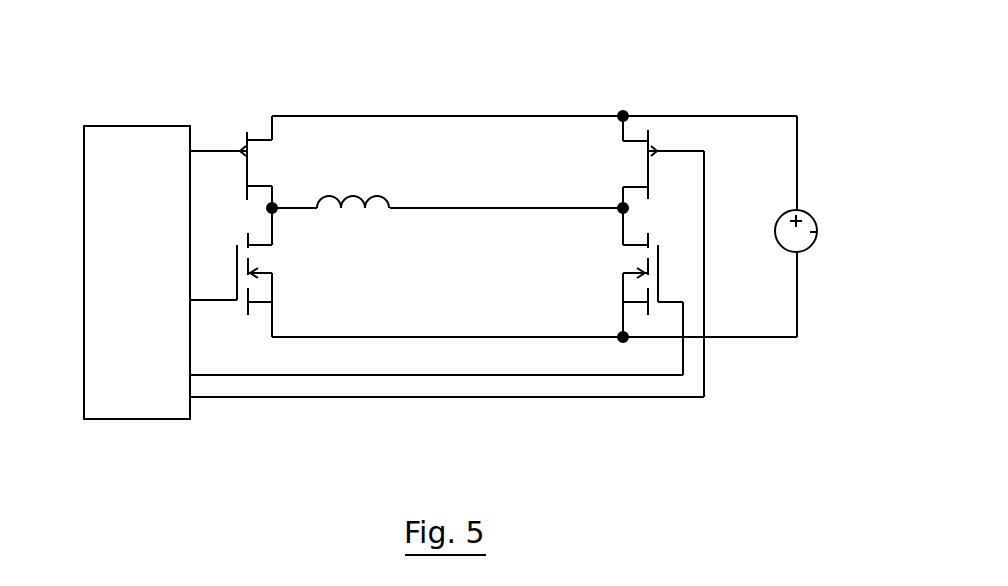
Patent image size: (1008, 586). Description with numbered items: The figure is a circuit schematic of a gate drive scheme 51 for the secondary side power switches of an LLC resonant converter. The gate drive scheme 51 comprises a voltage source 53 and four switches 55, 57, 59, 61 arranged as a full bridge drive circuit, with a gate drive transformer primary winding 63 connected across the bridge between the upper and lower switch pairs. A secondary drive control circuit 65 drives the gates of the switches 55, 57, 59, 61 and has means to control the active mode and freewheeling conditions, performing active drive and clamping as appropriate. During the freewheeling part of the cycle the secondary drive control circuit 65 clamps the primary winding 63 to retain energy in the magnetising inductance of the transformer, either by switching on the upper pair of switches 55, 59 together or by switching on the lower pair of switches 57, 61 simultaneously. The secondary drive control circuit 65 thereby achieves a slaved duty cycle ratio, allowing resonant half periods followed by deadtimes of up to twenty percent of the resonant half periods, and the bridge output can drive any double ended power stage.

The gate drive scheme 51 is at (712, 68).
The voltage source 53 is at (818, 232).
The switch 55 is at (262, 152).
The switch 57 is at (268, 265).
The switch 59 is at (632, 152).
The switch 61 is at (625, 265).
The gate drive transformer primary winding 63 is at (350, 195).
The secondary drive control circuit 65 is at (130, 150).